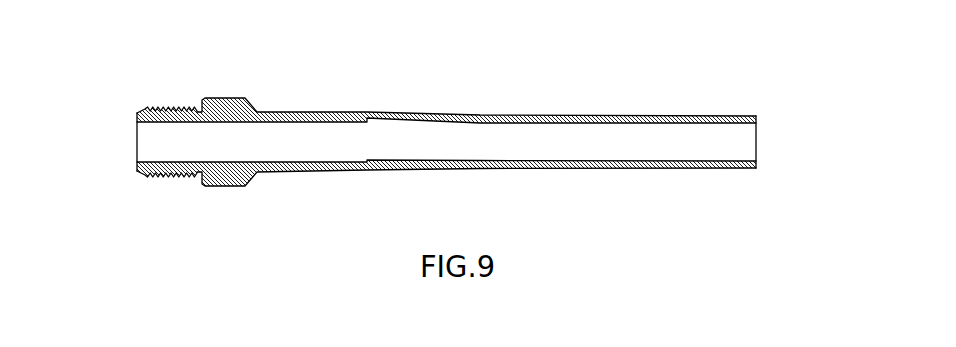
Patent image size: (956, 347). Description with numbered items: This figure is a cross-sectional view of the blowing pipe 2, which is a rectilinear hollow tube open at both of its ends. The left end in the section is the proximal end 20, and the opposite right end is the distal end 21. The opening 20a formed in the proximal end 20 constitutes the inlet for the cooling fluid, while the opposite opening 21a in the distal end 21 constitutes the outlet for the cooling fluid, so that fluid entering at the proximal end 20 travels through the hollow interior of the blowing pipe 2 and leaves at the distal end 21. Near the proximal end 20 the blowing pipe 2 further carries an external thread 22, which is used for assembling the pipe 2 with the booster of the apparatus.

The blowing pipe 2 is at (558, 98).
The proximal end 20 is at (113, 139).
The opening 20a is at (140, 157).
The distal end 21 is at (778, 133).
The opening 21a is at (757, 125).
The external thread 22 is at (175, 90).